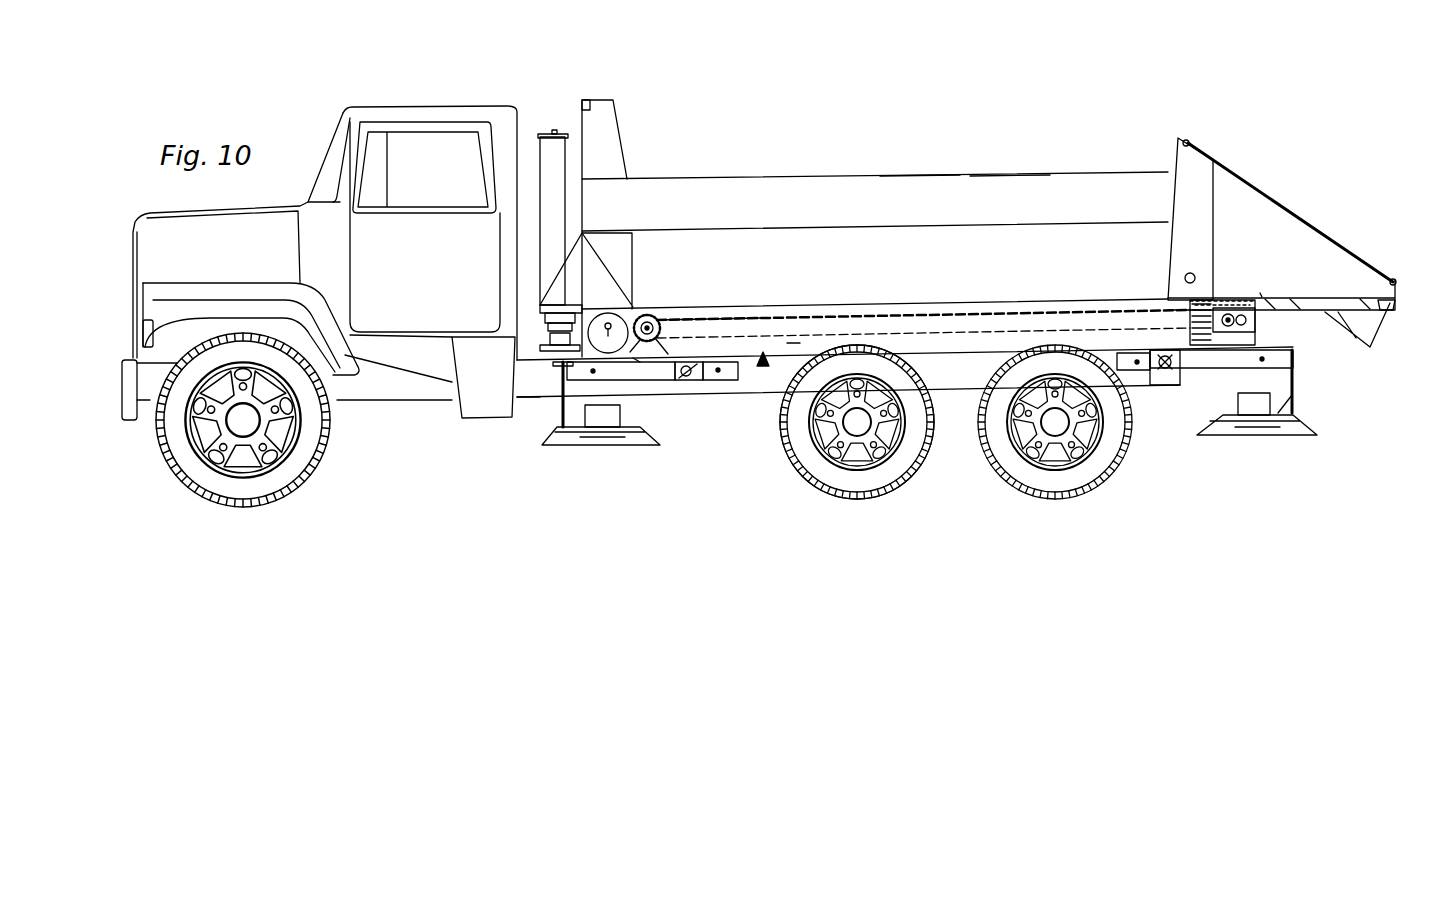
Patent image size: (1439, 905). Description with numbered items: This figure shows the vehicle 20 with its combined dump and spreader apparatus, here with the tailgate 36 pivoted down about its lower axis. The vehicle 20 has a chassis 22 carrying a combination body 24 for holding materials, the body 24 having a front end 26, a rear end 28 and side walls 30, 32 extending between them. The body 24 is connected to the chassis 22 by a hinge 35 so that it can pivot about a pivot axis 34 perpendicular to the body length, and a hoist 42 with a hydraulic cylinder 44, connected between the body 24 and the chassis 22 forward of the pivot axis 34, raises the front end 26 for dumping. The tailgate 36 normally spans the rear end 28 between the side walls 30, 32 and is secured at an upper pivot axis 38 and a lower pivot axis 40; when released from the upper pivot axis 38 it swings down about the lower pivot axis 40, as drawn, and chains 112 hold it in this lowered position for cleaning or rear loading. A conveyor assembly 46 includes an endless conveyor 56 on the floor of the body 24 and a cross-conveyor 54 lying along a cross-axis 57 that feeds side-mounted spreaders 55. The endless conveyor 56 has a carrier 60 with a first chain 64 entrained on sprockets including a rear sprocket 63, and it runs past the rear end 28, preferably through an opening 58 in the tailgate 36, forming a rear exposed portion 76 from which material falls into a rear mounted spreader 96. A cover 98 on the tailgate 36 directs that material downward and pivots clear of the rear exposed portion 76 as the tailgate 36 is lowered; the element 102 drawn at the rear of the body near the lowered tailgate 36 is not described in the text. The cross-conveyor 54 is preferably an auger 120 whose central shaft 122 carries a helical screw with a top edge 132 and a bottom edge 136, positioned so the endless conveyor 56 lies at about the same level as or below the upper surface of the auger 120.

The vehicle 20 is at (415, 100).
The chassis 22 is at (973, 370).
The combination body 24 is at (818, 192).
The front end 26 is at (602, 98).
The rear end 28 is at (1180, 137).
The side wall 30 is at (915, 247).
The side wall 32 is at (998, 240).
The pivot axis 34 is at (1170, 367).
The hinge 35 is at (1160, 370).
The tailgate 36 is at (1400, 295).
The upper pivot axis 38 is at (1395, 277).
The lower pivot axis 40 is at (1228, 300).
The hoist 42 is at (549, 131).
The hydraulic cylinder 44 is at (553, 183).
The conveyor assembly 46 is at (760, 366).
The cross-conveyor 54 is at (633, 360).
The side-mounted spreader 55 is at (562, 446).
The endless conveyor 56 is at (945, 340).
The cross-axis 57 is at (655, 316).
The opening 58 is at (1260, 293).
The carrier 60 is at (787, 345).
The rear sprocket 63 is at (1180, 297).
The first chain 64 is at (665, 318).
The rear exposed portion 76 is at (1247, 328).
The rear mounted spreader 96 is at (1297, 436).
The cover 98 is at (1393, 313).
The rear cross frame 102 is at (1348, 300).
The chains 112 is at (1242, 177).
The auger 120 is at (560, 386).
The central shaft 122 is at (612, 312).
The top edge 132 is at (610, 300).
The bottom edge 136 is at (553, 395).